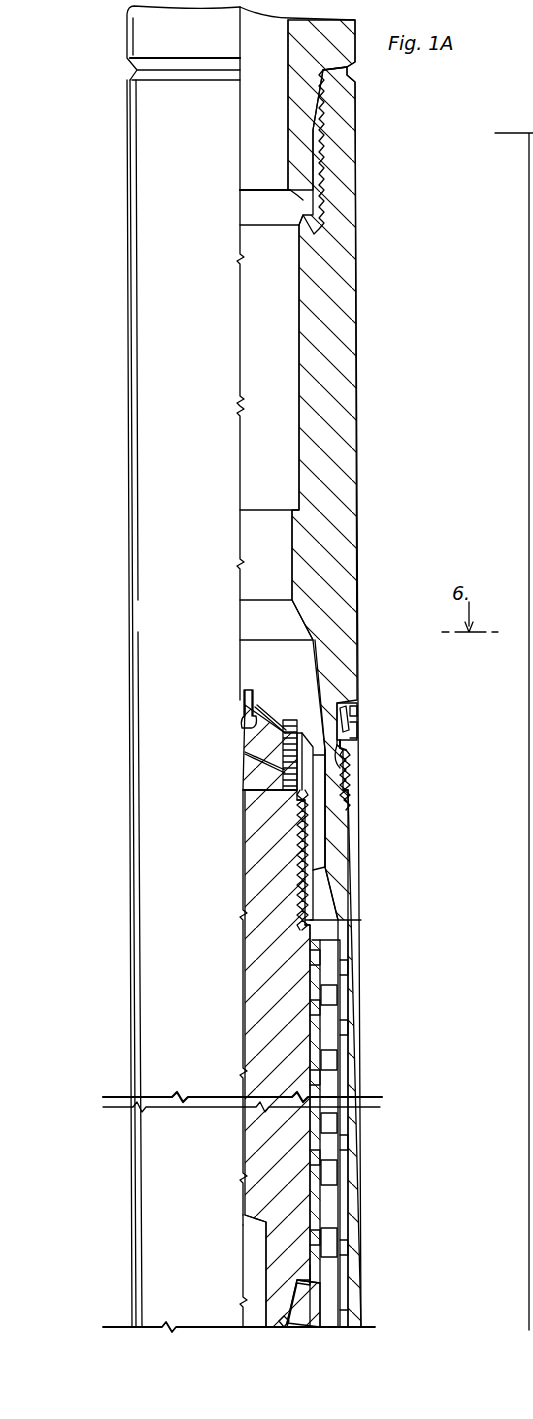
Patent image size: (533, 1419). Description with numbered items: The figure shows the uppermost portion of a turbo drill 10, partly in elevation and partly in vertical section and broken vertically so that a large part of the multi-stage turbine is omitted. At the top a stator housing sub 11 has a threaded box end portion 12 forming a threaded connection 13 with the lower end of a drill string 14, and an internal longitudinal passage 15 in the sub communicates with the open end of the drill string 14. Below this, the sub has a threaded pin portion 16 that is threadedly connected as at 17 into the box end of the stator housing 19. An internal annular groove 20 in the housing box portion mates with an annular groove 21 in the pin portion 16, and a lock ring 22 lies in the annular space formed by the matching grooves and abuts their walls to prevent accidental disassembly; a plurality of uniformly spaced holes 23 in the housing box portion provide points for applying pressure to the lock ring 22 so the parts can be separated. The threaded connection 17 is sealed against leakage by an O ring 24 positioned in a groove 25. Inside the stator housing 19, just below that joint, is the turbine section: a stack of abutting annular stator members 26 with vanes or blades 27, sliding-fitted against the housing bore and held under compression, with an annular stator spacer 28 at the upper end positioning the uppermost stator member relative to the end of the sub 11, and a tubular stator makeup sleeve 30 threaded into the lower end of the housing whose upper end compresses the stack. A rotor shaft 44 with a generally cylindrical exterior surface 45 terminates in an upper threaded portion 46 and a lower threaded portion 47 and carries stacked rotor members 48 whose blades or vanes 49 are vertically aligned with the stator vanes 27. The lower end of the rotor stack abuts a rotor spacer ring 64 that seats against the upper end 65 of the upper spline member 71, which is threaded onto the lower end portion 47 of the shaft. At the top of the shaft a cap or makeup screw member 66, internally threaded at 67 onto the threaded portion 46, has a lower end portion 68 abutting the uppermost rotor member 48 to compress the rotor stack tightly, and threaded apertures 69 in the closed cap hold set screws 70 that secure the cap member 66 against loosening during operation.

The turbo drill 10 is at (116, 612).
The stator housing sub 11 is at (148, 330).
The threaded box end portion 12 is at (352, 87).
The threaded connection 13 is at (318, 134).
The drill string 14 is at (127, 33).
The internal longitudinal passage 15 is at (300, 372).
The threaded pin portion 16 is at (333, 803).
The threaded connection 17 is at (357, 822).
The stator housing 19 is at (353, 907).
The internal annular groove 20 is at (347, 740).
The annular groove 21 is at (333, 722).
The lock ring 22 is at (340, 717).
The holes 23 is at (350, 720).
The O ring 24 is at (342, 750).
The groove 25 is at (347, 763).
The stator members 26 is at (340, 965).
The vanes or blades 27 is at (325, 963).
The annular stator spacer 28 is at (340, 930).
The stator makeup sleeve 30 is at (343, 1307).
The rotor shaft 44 is at (257, 982).
The cylindrical exterior surface 45 is at (312, 997).
The threaded portion 46 is at (300, 843).
The threaded portion 47 is at (280, 1317).
The rotor members 48 is at (317, 952).
The blades or vanes 49 is at (330, 995).
The rotor spacer ring 64 is at (310, 1270).
The upper end 65 is at (300, 1278).
The cap or makeup screw member 66 is at (255, 690).
The internal threads 67 is at (300, 817).
The lower end portion 68 is at (307, 933).
The threaded apertures 69 is at (290, 717).
The set screws 70 is at (285, 770).
The upper spline member 71 is at (307, 1298).